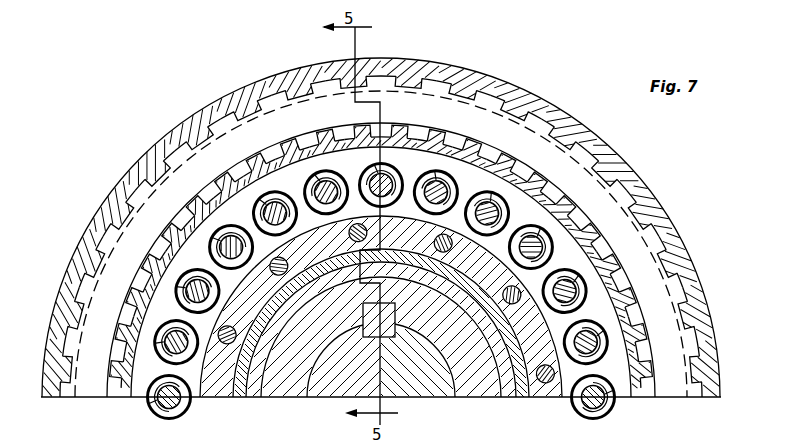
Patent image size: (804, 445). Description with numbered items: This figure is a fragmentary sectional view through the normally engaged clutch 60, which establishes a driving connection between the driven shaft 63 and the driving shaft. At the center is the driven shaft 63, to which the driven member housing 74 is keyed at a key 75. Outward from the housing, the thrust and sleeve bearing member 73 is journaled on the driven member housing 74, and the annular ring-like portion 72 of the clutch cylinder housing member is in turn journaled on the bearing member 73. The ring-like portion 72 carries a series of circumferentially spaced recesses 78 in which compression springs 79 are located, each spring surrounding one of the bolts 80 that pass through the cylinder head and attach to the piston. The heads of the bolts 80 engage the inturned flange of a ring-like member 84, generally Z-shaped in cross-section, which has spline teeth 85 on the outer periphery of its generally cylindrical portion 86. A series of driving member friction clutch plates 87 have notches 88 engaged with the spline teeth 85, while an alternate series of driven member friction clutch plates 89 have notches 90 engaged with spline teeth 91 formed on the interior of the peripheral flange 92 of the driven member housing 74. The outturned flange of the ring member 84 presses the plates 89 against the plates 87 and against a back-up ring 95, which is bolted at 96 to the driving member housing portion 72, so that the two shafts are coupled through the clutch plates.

The normally engaged clutch 60 is at (130, 152).
The shaft 63 is at (423, 385).
The annular ring-like portion 72 is at (520, 387).
The thrust and sleeve bearing member 73 is at (502, 387).
The driven member housing 74 is at (555, 108).
The key 75 is at (330, 366).
The recesses 78 is at (172, 320).
The compression springs 79 is at (163, 353).
The bolts 80 is at (180, 398).
The ring-like member 84 is at (638, 385).
The spline teeth 85 is at (625, 282).
The cylindrical portion 86 is at (655, 335).
The driving member friction clutch plates 87 is at (650, 224).
The notches 88 is at (613, 248).
The driven member friction clutch plates 89 is at (548, 140).
The notches 90 is at (568, 158).
The spline teeth 91 is at (608, 178).
The peripheral flange 92 is at (510, 77).
The back-up ring 95 is at (544, 376).
The bolts 96 is at (542, 392).